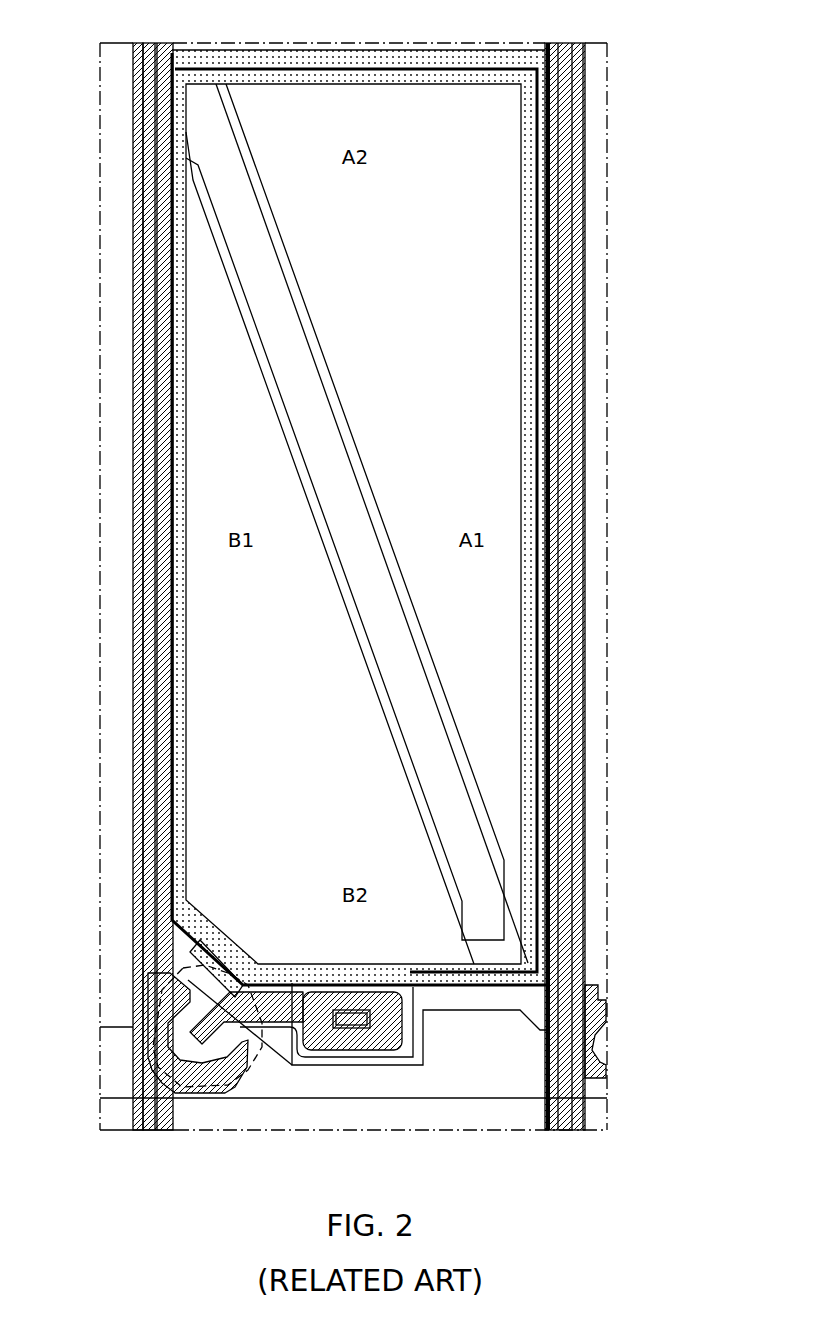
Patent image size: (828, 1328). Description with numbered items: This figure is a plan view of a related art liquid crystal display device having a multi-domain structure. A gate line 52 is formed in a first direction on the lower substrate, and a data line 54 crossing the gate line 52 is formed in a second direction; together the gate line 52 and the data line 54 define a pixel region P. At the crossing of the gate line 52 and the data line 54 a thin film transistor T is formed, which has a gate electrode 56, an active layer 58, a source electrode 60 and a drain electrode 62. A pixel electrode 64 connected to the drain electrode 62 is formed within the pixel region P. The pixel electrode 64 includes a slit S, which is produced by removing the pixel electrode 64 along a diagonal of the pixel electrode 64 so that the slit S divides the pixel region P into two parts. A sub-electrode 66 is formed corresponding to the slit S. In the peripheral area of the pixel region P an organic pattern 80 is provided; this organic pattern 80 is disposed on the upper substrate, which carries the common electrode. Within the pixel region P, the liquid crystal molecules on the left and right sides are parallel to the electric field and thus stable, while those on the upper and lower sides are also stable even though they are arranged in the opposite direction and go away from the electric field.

The gate line 52 is at (503, 1098).
The data line 54 is at (135, 913).
The gate electrode 56 is at (202, 980).
The active layer 58 is at (205, 1095).
The source electrode 60 is at (133, 1000).
The drain electrode 62 is at (345, 1050).
The pixel electrode 64 is at (185, 405).
The sub-electrode 66 is at (332, 408).
The organic pattern 80 is at (432, 88).
The pixel region P is at (132, 8).
The slit S is at (346, 585).
The thin film transistor T is at (240, 987).